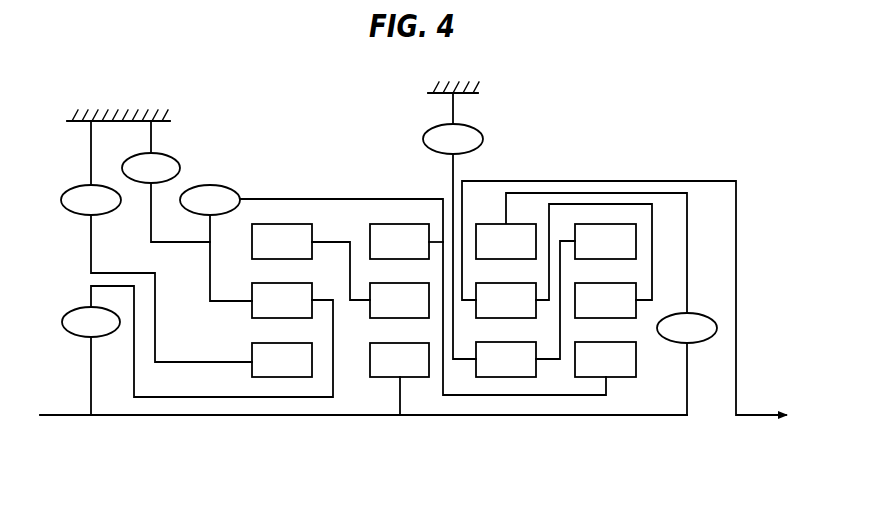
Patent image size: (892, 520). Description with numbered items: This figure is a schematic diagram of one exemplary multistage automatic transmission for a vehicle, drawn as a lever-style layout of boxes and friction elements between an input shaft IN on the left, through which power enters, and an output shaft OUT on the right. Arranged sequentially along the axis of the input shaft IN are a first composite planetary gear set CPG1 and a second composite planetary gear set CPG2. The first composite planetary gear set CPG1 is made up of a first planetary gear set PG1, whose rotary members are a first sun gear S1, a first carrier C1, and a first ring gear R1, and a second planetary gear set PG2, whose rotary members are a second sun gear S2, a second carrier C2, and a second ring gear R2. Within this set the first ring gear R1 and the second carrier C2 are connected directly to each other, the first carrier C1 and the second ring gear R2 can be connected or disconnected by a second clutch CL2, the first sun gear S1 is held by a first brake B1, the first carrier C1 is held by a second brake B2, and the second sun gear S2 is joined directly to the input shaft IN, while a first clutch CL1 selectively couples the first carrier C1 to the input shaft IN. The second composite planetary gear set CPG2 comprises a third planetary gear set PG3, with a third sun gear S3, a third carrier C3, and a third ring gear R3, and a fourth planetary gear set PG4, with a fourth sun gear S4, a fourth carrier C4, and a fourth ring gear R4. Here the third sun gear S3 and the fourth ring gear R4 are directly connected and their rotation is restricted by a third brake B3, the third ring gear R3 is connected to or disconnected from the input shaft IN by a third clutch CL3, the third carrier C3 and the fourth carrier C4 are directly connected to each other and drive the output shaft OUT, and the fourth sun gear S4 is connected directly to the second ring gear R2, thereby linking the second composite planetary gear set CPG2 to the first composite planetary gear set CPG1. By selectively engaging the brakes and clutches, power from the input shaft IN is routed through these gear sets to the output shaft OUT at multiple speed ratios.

The input shaft IN is at (363, 376).
The output shaft OUT is at (625, 300).
The first brake B1 is at (156, 241).
The second brake B2 is at (166, 181).
The third brake B3 is at (453, 226).
The first clutch CL1 is at (197, 341).
The second clutch CL2 is at (393, 290).
The third clutch CL3 is at (611, 304).
The first composite planetary gear set CPG1 is at (290, 128).
The second composite planetary gear set CPG2 is at (538, 469).
The first planetary gear set PG1 is at (277, 218).
The second planetary gear set PG2 is at (403, 218).
The third planetary gear set PG3 is at (523, 386).
The fourth planetary gear set PG4 is at (624, 386).
The first ring gear R1 is at (282, 241).
The second ring gear R2 is at (399, 241).
The third ring gear R3 is at (506, 241).
The fourth ring gear R4 is at (605, 241).
The first carrier C1 is at (282, 300).
The second carrier C2 is at (399, 300).
The third carrier C3 is at (506, 300).
The fourth carrier C4 is at (605, 300).
The first sun gear S1 is at (282, 360).
The second sun gear S2 is at (399, 360).
The third sun gear S3 is at (506, 359).
The fourth sun gear S4 is at (605, 359).